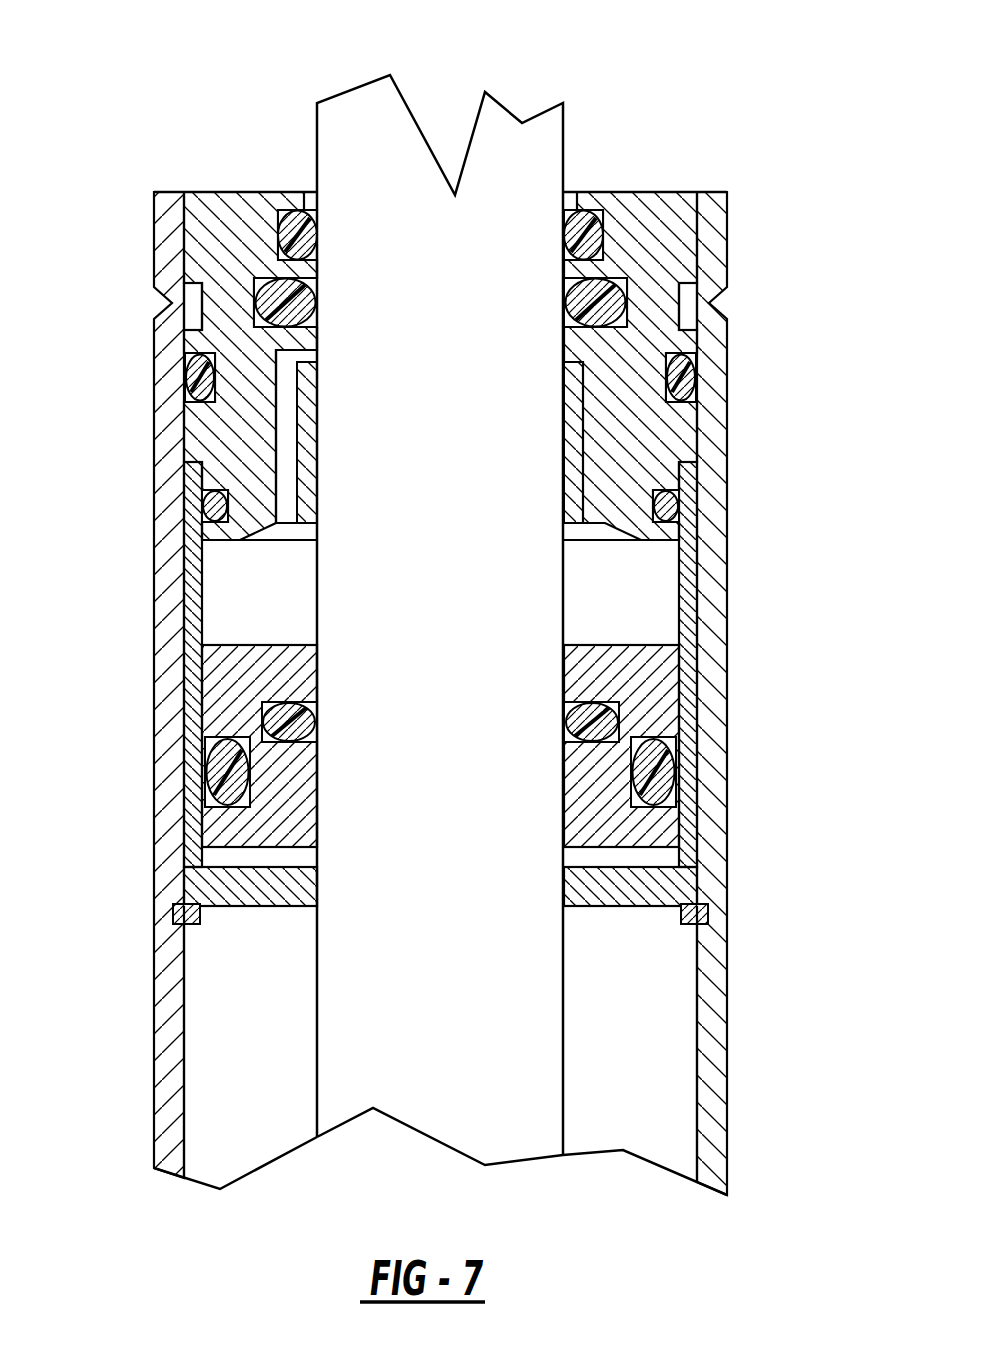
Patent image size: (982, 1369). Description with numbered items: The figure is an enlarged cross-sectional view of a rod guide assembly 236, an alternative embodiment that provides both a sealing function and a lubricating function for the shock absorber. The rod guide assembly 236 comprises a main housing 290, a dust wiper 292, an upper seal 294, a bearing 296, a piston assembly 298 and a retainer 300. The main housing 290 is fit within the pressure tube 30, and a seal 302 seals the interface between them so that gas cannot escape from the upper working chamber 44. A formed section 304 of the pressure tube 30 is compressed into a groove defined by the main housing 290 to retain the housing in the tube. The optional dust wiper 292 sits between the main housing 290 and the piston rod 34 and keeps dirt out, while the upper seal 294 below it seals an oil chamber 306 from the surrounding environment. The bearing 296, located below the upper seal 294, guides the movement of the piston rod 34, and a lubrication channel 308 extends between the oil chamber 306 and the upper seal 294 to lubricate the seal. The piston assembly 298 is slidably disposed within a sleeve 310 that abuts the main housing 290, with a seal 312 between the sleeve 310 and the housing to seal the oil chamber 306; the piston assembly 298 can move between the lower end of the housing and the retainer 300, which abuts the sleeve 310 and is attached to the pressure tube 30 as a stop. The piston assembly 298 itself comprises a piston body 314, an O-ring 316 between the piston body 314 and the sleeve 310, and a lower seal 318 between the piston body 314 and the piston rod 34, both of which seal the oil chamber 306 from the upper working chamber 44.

The pressure tube 30 is at (713, 1083).
The piston rod 34 is at (438, 1003).
The upper working chamber 44 is at (636, 1039).
The rod guide assembly 236 is at (627, 170).
The main housing 290 is at (575, 420).
The dust wiper 292 is at (603, 235).
The upper seal 294 is at (612, 300).
The bearing 296 is at (663, 442).
The piston assembly 298 is at (640, 695).
The retainer 300 is at (640, 907).
The seal 302 is at (682, 373).
The formed section 304 is at (190, 303).
The oil chamber 306 is at (258, 597).
The lubrication channel 308 is at (285, 425).
The sleeve 310 is at (195, 557).
The seal 312 is at (215, 503).
The piston body 314 is at (238, 678).
The O-ring 316 is at (220, 773).
The lower seal 318 is at (600, 720).